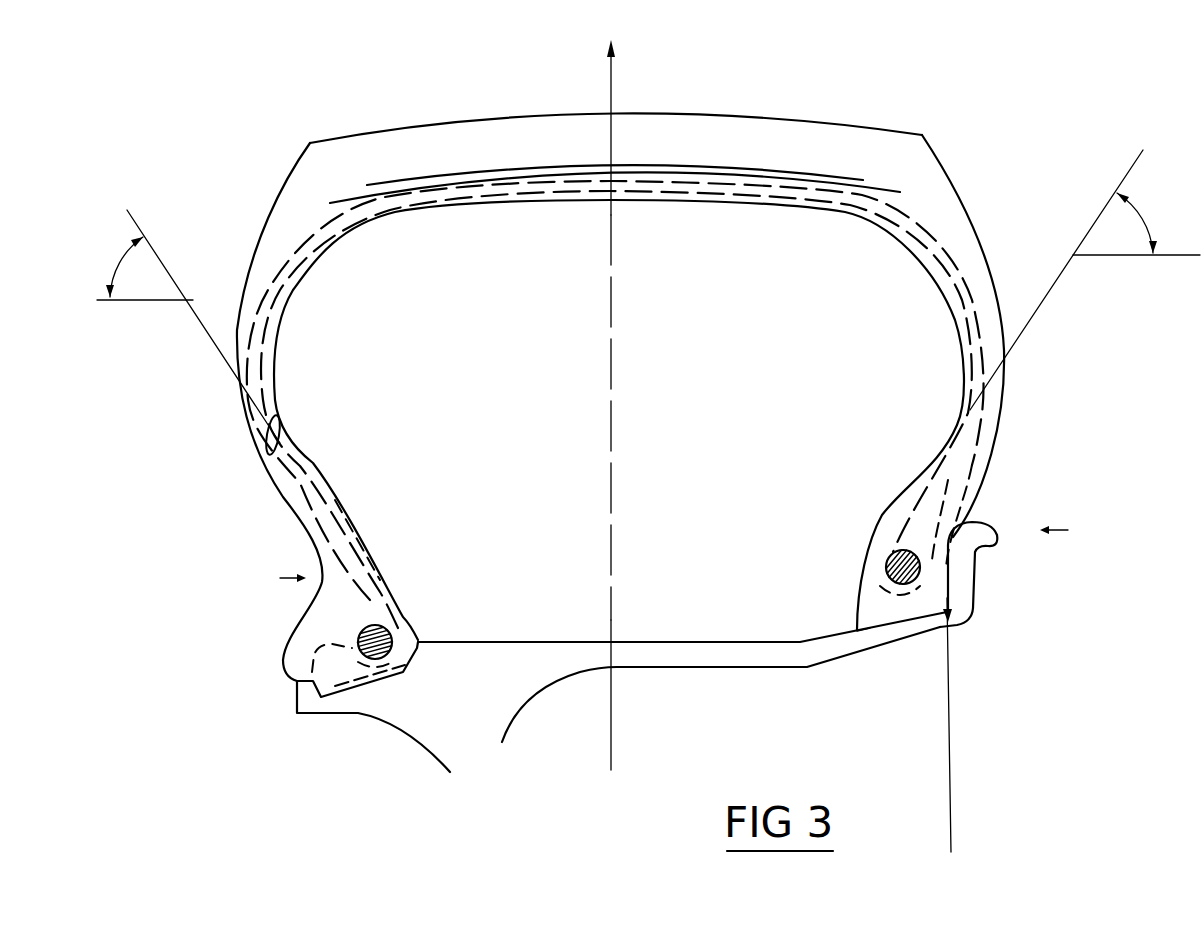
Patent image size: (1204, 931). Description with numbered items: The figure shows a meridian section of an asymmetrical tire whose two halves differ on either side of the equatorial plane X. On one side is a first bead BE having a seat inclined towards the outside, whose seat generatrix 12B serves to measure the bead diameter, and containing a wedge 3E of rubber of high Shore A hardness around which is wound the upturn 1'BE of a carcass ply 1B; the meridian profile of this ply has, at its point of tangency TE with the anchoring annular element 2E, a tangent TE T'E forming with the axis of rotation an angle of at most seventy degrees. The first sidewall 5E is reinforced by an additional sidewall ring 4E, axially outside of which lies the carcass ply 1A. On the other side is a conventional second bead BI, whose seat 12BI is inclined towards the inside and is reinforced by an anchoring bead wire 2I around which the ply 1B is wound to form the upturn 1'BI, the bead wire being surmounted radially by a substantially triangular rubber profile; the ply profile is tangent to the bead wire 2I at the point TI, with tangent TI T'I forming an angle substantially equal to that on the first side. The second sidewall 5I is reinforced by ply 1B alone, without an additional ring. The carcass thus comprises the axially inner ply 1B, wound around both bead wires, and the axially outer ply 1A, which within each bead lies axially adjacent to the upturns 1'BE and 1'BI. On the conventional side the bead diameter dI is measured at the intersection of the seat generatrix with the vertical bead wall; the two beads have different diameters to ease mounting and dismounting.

The axially outer carcass ply 1A is at (303, 247).
The axially inner carcass ply 1B is at (267, 338).
The upturn of carcass ply 1B (first bead) 1'BE is at (397, 529).
The upturn of carcass ply 1B (second bead) 1'BI is at (1011, 498).
The anchoring annular element 2E is at (403, 672).
The anchoring element or bead wire 2I is at (887, 580).
The wedge of rubber 3E is at (337, 667).
The additional sidewall ring 4E is at (270, 435).
The first sidewall 5E is at (277, 477).
The second sidewall 5I is at (1003, 377).
The generatrix of the seat 12B is at (360, 683).
The seat of the second bead 12BI is at (905, 584).
The point of tangency (first bead) TE is at (417, 627).
The point of tangency (second bead) TI is at (877, 562).
The end of tangent line TE T'E is at (201, 301).
The end of tangent line TI T'I is at (1056, 260).
The first bead BE is at (267, 569).
The second bead BI is at (1079, 528).
The diameter of the second bead dI is at (963, 725).
The equatorial plane XX' X is at (658, 768).